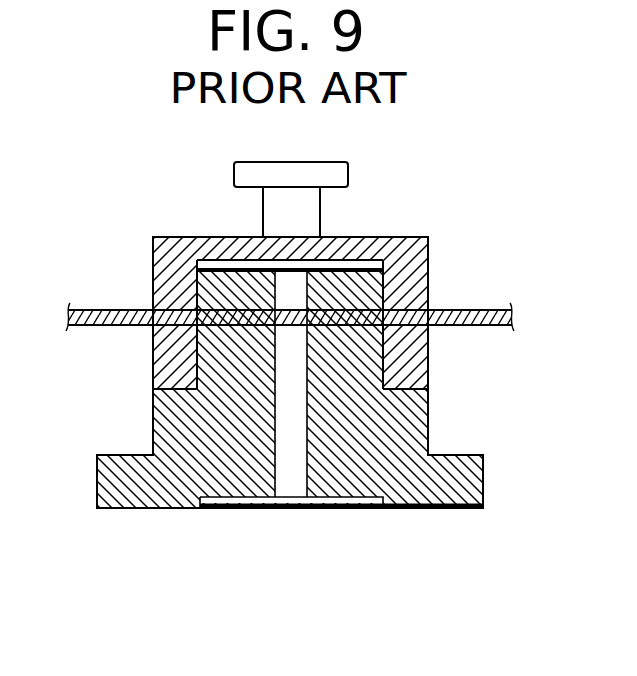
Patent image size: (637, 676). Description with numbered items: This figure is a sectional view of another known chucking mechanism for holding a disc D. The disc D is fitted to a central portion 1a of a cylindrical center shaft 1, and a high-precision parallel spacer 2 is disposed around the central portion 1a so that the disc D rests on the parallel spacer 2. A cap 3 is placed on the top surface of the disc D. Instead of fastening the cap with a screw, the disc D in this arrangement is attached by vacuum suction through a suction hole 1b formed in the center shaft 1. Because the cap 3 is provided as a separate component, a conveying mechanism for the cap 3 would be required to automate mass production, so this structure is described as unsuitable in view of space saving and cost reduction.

The center shaft 1 is at (408, 428).
The central portion 1a is at (223, 290).
The suction hole 1b is at (290, 473).
The parallel spacer 2 is at (408, 362).
The cap 3 is at (398, 248).
The disc D is at (473, 315).